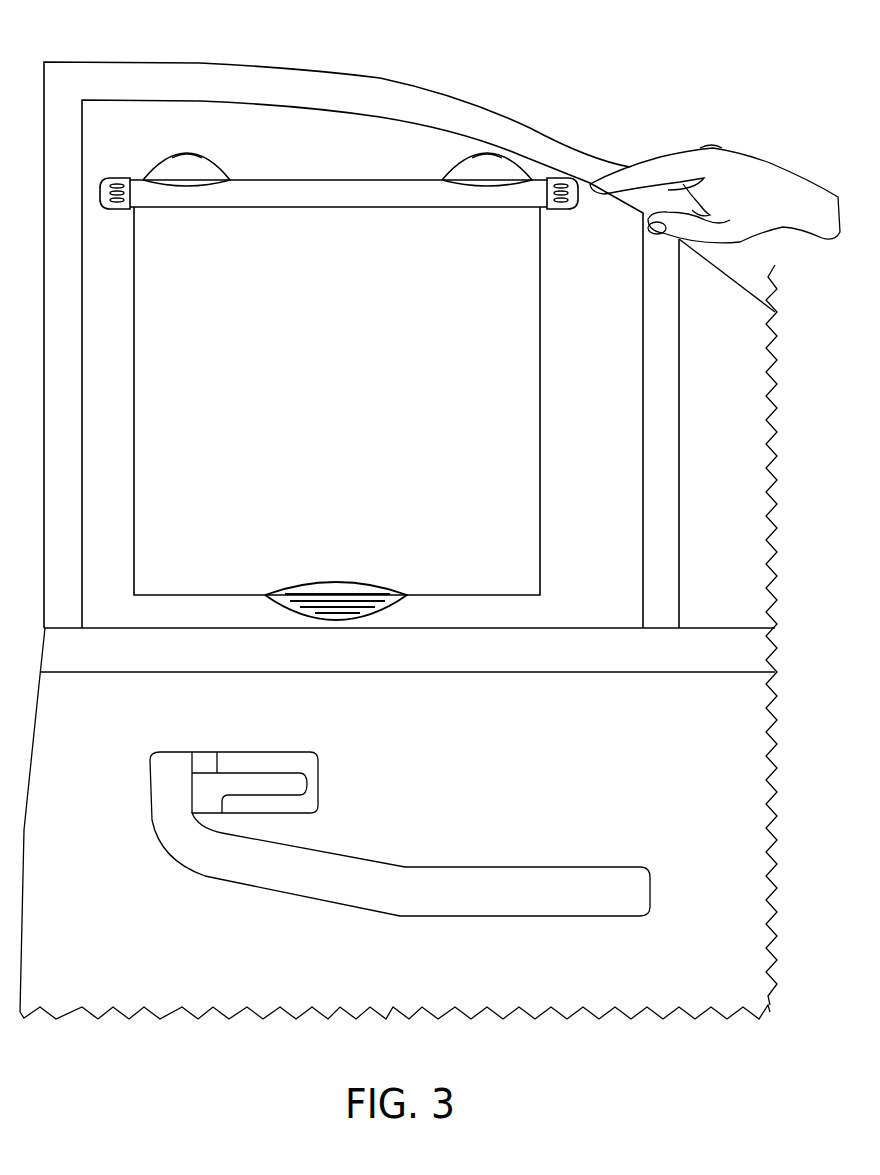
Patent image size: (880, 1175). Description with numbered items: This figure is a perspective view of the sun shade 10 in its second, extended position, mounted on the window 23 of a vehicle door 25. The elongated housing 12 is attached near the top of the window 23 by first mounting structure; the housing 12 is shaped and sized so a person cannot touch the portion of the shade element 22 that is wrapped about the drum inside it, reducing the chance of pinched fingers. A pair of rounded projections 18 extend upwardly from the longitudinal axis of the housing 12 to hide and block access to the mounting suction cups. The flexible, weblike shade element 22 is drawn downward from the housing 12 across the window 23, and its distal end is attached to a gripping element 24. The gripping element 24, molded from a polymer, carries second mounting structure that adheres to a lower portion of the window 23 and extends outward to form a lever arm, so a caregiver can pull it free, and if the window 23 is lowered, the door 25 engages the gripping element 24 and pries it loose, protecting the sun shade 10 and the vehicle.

The sun shade 10 is at (478, 83).
The housing 12 is at (278, 180).
The rounded projections 18 is at (150, 176).
The shade element 22 is at (535, 340).
The window 23 is at (607, 468).
The gripping element 24 is at (398, 603).
The vehicle door 25 is at (657, 775).